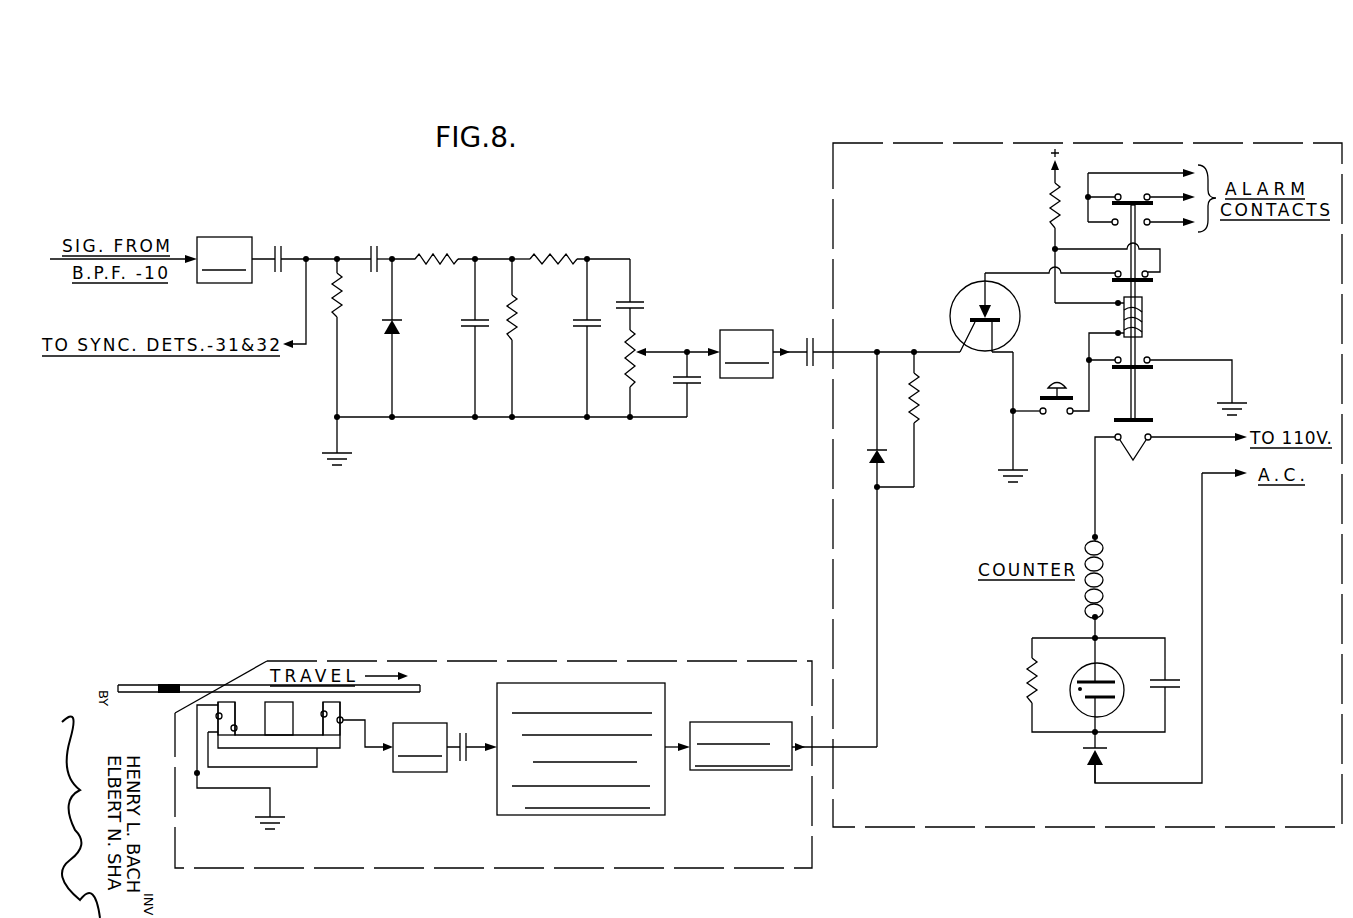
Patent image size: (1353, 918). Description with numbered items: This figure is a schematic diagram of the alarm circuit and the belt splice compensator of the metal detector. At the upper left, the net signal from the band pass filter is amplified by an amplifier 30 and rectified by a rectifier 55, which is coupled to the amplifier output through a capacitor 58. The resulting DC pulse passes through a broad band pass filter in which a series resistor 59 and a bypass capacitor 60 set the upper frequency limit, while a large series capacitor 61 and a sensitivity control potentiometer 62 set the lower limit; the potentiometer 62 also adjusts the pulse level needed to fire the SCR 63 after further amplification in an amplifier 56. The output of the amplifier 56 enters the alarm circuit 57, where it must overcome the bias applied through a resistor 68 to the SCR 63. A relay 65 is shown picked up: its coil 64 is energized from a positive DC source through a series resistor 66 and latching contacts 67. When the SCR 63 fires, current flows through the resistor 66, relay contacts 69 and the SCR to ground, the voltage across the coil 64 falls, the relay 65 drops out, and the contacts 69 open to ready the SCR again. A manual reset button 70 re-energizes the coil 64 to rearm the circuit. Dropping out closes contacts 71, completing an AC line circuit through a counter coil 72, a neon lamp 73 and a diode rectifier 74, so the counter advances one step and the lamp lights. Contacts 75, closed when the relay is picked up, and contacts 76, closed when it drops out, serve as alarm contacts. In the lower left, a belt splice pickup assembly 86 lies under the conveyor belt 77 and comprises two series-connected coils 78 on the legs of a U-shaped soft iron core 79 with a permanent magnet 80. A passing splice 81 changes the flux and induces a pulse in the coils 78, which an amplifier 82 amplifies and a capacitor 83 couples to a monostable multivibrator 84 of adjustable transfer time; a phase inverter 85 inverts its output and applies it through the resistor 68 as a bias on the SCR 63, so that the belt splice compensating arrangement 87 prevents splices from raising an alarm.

The amplifier 30 is at (225, 237).
The rectifier 55 is at (400, 326).
The amplifier 56 is at (748, 330).
The alarm circuit 57 is at (831, 174).
The capacitor 58 is at (377, 246).
The series resistor 59 is at (556, 246).
The bypass capacitor 60 is at (578, 330).
The series capacitor 61 is at (642, 304).
The sensitivity control potentiometer 62 is at (626, 355).
The SCR 63 is at (958, 304).
The relay coil 64 is at (1142, 326).
The relay 65 is at (1142, 302).
The series resistor 66 is at (1048, 210).
The latching contacts 67 is at (1150, 358).
The resistor 68 is at (922, 401).
The relay contacts 69 is at (1142, 271).
The manual reset button 70 is at (1055, 383).
The contacts 71 is at (1133, 462).
The counter coil 72 is at (1104, 583).
The neon lamp 73 is at (1117, 680).
The diode rectifier 74 is at (1088, 757).
The contacts 75 is at (1148, 194).
The contacts 76 is at (1150, 226).
The conveyor belt 77 is at (205, 684).
The coils 78 is at (237, 727).
The soft iron core 79 is at (323, 750).
The permanent magnet 80 is at (288, 729).
The splice 81 is at (171, 683).
The amplifier 82 is at (430, 773).
The capacitor 83 is at (462, 731).
The monostable multivibrator 84 is at (590, 817).
The phase inverter 85 is at (755, 772).
The belt splice pickup assembly 86 is at (338, 752).
The belt splice compensating arrangement 87 is at (513, 662).